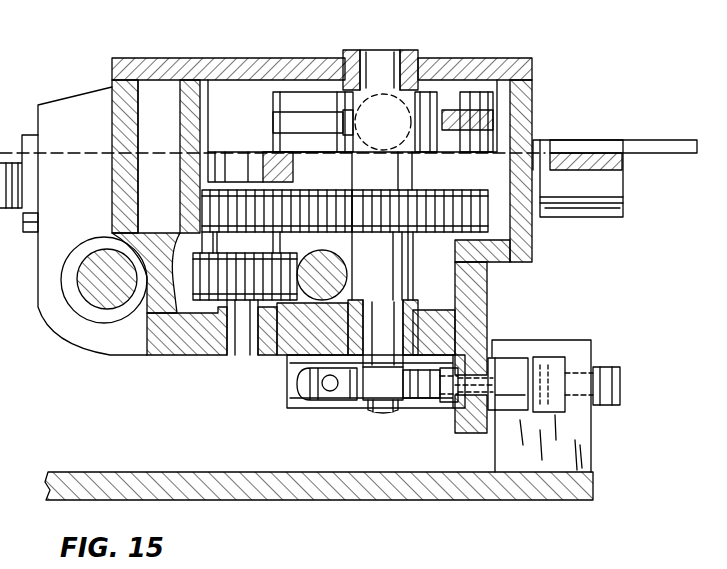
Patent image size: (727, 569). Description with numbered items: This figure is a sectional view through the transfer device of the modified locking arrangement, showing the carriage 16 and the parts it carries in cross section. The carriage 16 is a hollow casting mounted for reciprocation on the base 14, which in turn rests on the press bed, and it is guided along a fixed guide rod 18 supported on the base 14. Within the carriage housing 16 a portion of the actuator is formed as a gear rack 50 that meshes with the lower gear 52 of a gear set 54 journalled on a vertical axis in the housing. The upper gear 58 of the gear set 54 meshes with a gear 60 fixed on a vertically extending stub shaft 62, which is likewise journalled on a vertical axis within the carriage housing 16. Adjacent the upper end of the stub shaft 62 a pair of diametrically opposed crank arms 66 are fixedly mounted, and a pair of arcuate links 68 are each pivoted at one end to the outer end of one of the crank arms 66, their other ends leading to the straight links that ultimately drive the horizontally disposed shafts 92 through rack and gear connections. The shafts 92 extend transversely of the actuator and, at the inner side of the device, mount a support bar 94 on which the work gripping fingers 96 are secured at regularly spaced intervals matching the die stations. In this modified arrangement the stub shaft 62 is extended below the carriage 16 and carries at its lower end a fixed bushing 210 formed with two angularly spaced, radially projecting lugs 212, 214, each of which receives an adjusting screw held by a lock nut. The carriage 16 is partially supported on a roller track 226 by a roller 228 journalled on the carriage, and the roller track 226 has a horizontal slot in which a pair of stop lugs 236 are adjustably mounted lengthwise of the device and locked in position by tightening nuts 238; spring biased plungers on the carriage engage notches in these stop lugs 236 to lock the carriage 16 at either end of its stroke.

The base 14 is at (575, 488).
The carriage 16 is at (537, 90).
The guide rod 18 is at (103, 307).
The gear rack 50 is at (336, 250).
The lower gear 52 is at (193, 268).
The gear set 54 is at (200, 240).
The upper gear 58 is at (275, 203).
The gear 60 is at (445, 203).
The stub shaft 62 is at (360, 338).
The crank arms 66 is at (298, 96).
The arcuate links 68 is at (285, 120).
The shaft 92 is at (613, 197).
The support bar 94 is at (592, 153).
The work gripping fingers 96 is at (660, 145).
The fixed bushing 210 is at (418, 370).
The lug 212 is at (315, 400).
The lug 214 is at (377, 366).
The roller track 226 is at (592, 450).
The roller 228 is at (502, 364).
The stop lugs 236 is at (563, 362).
The nuts 238 is at (607, 370).